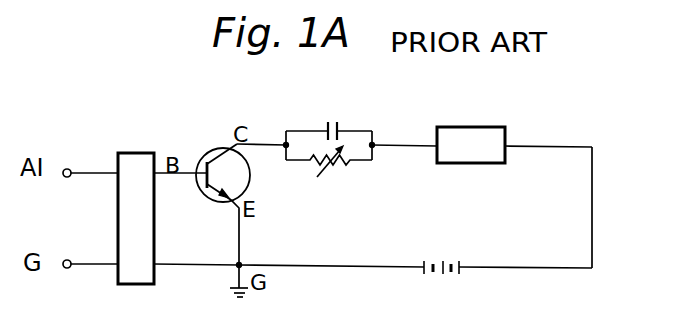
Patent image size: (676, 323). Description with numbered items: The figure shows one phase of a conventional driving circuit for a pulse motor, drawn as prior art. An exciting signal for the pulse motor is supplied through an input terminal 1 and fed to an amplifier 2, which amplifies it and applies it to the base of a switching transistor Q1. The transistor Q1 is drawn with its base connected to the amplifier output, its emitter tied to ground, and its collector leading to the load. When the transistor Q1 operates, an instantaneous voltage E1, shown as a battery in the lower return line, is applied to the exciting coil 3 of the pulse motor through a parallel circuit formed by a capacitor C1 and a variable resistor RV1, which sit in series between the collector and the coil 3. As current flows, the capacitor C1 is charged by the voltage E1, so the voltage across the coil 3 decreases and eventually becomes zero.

The input terminal 1 is at (67, 177).
The amplifier 2 is at (137, 153).
The exciting coil 3 is at (500, 127).
The switching transistor Q1 is at (219, 194).
The capacitor C1 is at (329, 127).
The variable resistor RV1 is at (331, 167).
The instantaneous voltage E1 is at (438, 277).